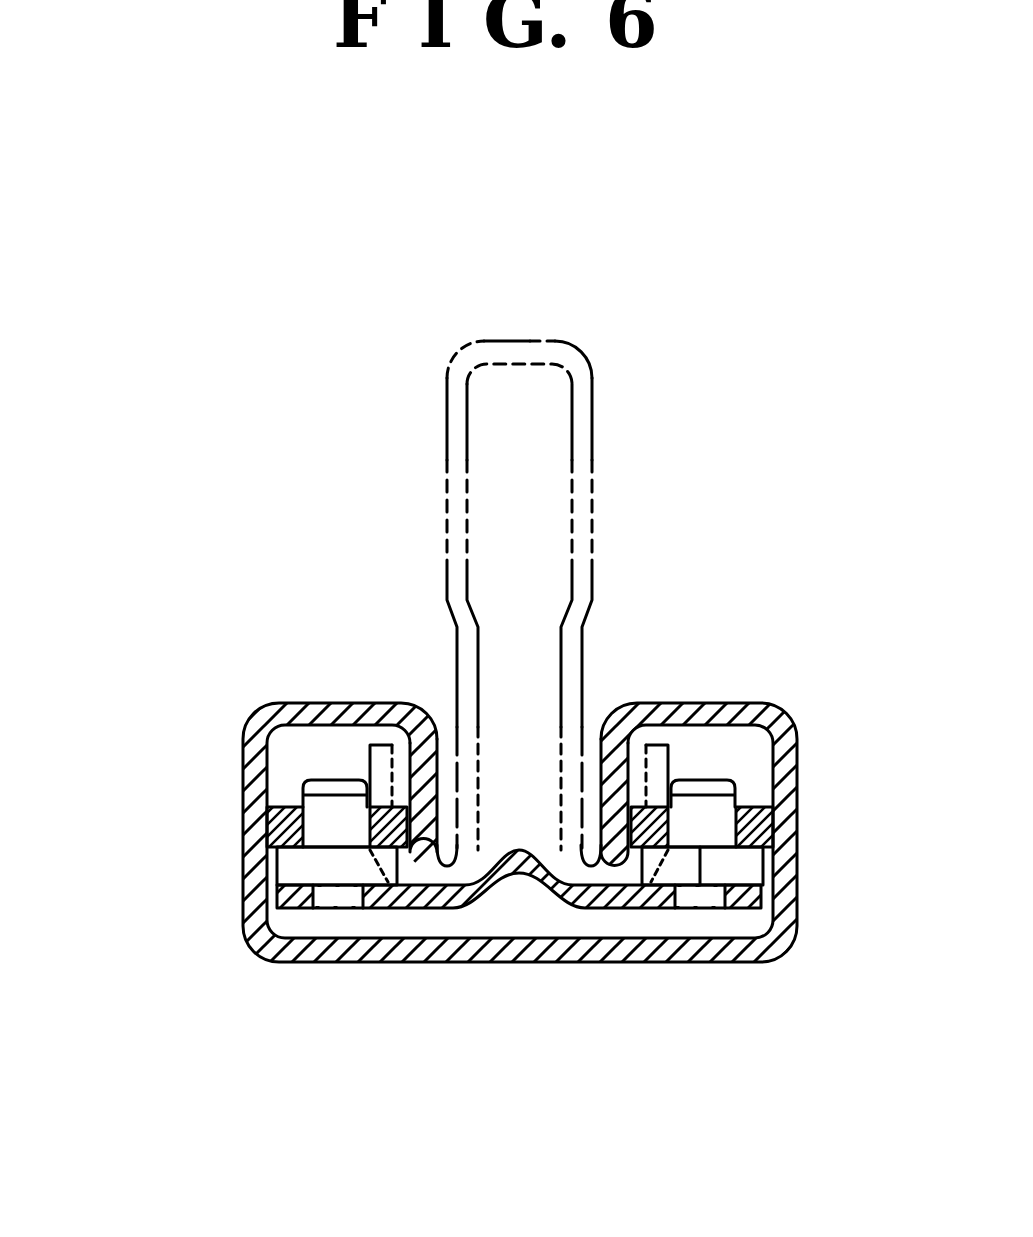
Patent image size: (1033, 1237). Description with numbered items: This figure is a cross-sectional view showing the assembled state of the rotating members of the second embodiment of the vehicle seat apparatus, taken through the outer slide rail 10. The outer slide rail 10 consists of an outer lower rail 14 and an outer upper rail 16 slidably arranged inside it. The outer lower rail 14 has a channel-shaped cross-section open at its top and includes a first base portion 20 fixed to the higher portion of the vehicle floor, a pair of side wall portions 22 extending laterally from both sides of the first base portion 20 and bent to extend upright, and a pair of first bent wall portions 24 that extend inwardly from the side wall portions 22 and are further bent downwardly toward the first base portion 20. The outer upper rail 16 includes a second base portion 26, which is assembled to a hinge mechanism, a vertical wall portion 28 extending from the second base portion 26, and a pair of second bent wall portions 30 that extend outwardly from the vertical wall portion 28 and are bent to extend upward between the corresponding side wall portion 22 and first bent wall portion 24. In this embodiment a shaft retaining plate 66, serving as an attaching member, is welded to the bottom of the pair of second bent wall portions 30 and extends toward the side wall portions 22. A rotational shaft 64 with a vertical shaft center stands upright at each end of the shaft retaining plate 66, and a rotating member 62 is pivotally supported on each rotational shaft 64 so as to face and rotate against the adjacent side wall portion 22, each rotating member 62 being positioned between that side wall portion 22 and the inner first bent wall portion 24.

The outer slide rail 10 is at (213, 323).
The outer lower rail 14 is at (790, 938).
The outer upper rail 16 is at (592, 398).
The first base portion 20 is at (554, 962).
The side wall portion 22 is at (797, 781).
The first bent wall portion 24 is at (437, 762).
The second base portion 26 is at (514, 338).
The vertical wall portion 28 is at (592, 524).
The second bent wall portion 30 is at (377, 762).
The rotating member 62 is at (270, 808).
The rotational shaft 64 is at (334, 830).
The shaft retaining plate 66 is at (680, 897).